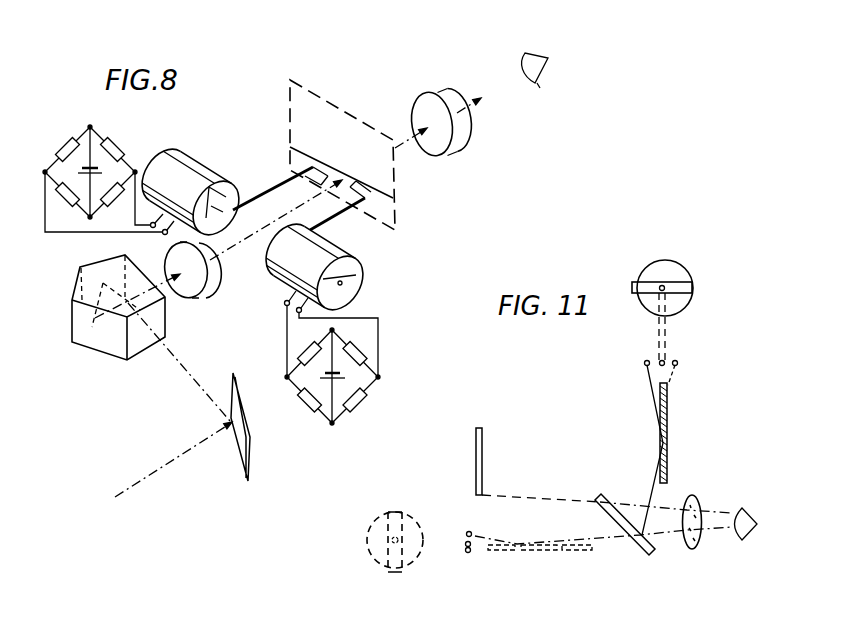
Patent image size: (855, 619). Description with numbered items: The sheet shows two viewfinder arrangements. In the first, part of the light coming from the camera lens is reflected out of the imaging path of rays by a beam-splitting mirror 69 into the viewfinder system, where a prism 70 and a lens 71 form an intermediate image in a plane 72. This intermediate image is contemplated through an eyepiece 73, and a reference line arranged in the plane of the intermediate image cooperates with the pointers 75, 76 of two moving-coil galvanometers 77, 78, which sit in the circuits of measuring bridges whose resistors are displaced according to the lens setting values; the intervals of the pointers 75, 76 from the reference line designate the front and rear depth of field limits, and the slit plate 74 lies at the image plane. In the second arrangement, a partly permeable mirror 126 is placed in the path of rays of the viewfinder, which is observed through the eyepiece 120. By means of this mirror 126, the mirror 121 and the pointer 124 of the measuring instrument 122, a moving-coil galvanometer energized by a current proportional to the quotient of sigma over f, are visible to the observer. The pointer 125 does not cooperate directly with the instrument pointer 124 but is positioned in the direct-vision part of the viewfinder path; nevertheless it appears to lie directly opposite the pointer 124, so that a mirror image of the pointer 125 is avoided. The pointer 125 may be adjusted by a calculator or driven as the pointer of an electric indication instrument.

In FIG. 8, the beam-splitting mirror 69 is at (248, 460).
In FIG. 8, the prism 70 is at (97, 338).
In FIG. 8, the lens 71 is at (198, 287).
In FIG. 8, the plane 72 is at (318, 98).
In FIG. 8, the eyepiece 73 is at (443, 150).
In FIG. 8, the slit plate 74 is at (393, 198).
In FIG. 8, the pointer 75 is at (270, 188).
In FIG. 8, the pointer 76 is at (335, 218).
In FIG. 8, the galvanometer 77 is at (190, 170).
In FIG. 8, the galvanometer 78 is at (350, 290).
In FIG. 11, the eyepiece 120 is at (698, 505).
In FIG. 11, the mirror 121 is at (667, 442).
In FIG. 11, the moving-coil galvanometer 122 is at (675, 303).
In FIG. 11, the pointer 124 is at (667, 358).
In FIG. 11, the pointer 125 is at (482, 435).
In FIG. 11, the partly permeable mirror 126 is at (621, 507).